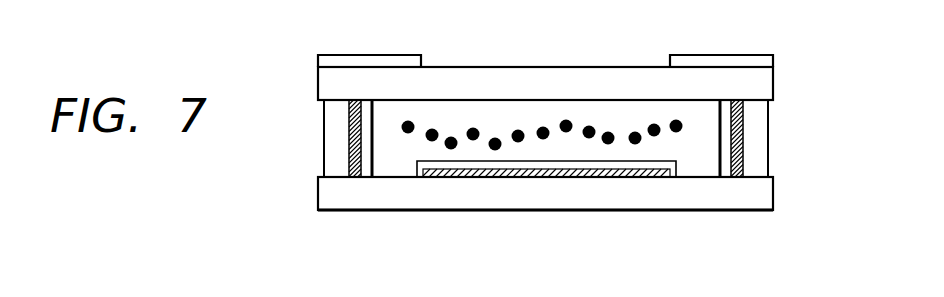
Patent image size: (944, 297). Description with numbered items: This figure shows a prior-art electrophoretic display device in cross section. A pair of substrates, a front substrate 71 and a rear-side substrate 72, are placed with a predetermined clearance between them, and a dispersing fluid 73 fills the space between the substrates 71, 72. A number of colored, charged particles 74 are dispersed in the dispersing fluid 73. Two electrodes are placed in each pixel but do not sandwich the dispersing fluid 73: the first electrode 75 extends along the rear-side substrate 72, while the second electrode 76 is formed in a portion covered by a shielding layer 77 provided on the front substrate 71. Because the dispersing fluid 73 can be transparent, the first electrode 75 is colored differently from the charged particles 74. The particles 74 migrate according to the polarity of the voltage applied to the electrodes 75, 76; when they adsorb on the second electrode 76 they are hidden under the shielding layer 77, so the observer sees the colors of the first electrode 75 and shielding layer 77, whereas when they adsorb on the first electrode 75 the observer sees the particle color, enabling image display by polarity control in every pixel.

The front substrate 71 is at (753, 85).
The rear-side substrate 72 is at (753, 193).
The dispersing fluid 73 is at (630, 118).
The charged particles 74 is at (473, 128).
The first electrode 75 is at (610, 173).
The second electrode 76 is at (349, 128).
The shielding layer 77 is at (729, 58).